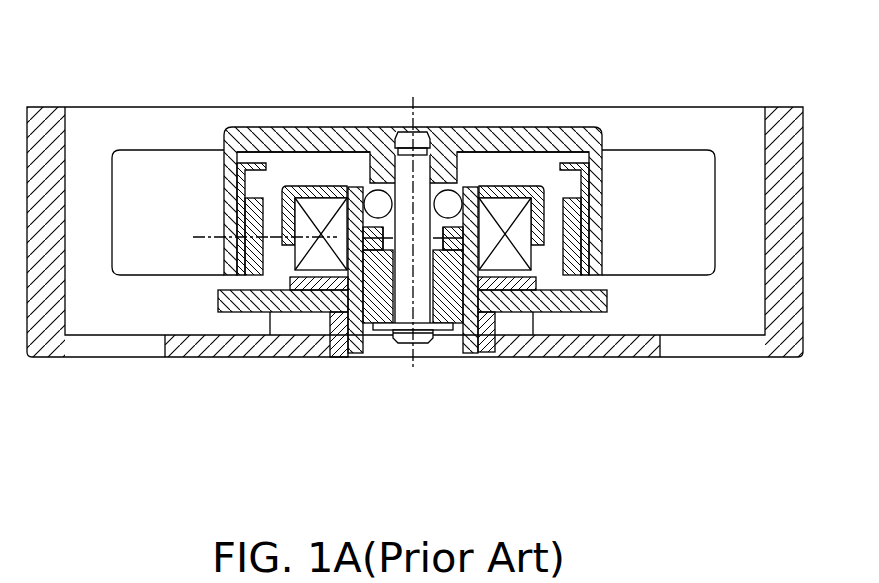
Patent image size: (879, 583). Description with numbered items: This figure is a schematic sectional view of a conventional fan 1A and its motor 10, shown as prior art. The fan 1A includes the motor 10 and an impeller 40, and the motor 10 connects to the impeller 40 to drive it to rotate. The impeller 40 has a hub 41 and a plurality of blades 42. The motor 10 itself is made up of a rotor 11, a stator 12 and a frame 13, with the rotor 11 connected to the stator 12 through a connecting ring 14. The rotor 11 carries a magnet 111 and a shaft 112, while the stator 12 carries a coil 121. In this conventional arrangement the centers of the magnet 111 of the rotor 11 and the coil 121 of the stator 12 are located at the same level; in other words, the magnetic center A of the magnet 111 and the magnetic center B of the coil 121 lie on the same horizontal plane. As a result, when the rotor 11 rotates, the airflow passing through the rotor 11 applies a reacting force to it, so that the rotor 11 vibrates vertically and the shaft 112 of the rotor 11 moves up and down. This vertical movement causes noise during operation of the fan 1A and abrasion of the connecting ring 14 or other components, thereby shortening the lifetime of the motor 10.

The fan 1A is at (94, 81).
The motor 10 is at (578, 157).
The rotor 11 is at (360, 60).
The magnet 111 is at (265, 207).
The shaft 112 is at (403, 168).
The stator 12 is at (412, 294).
The coil 121 is at (508, 257).
The frame 13 is at (785, 117).
The connecting ring 14 is at (390, 323).
The impeller 40 is at (607, 140).
The hub 41 is at (485, 133).
The blades 42 is at (675, 172).
The magnetic center of the magnet A is at (208, 238).
The magnetic center of the coil B is at (298, 240).